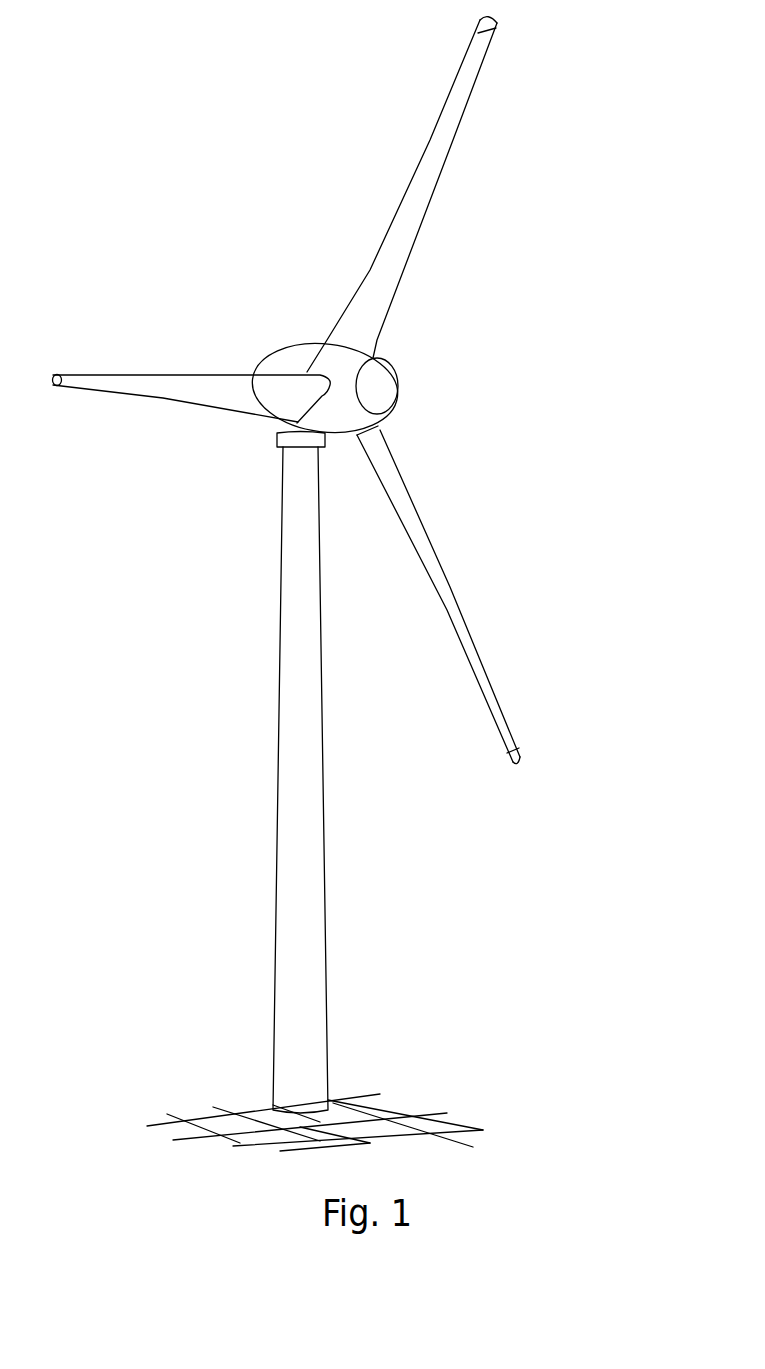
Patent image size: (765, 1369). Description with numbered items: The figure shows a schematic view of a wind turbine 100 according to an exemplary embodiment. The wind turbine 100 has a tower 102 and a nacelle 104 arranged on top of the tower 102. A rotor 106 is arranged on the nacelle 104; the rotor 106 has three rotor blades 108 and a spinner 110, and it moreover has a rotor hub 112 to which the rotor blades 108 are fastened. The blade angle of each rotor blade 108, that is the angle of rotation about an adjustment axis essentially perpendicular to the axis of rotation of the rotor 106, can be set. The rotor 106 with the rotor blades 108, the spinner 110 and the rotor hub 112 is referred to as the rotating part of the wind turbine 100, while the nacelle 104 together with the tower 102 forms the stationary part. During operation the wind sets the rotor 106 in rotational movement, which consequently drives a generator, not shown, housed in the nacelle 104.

The wind turbine 100 is at (233, 518).
The tower 102 is at (307, 880).
The nacelle 104 is at (293, 363).
The rotor 106 is at (480, 300).
The rotor blades 108 is at (443, 143).
The spinner 110 is at (387, 393).
The rotor hub 112 is at (342, 413).